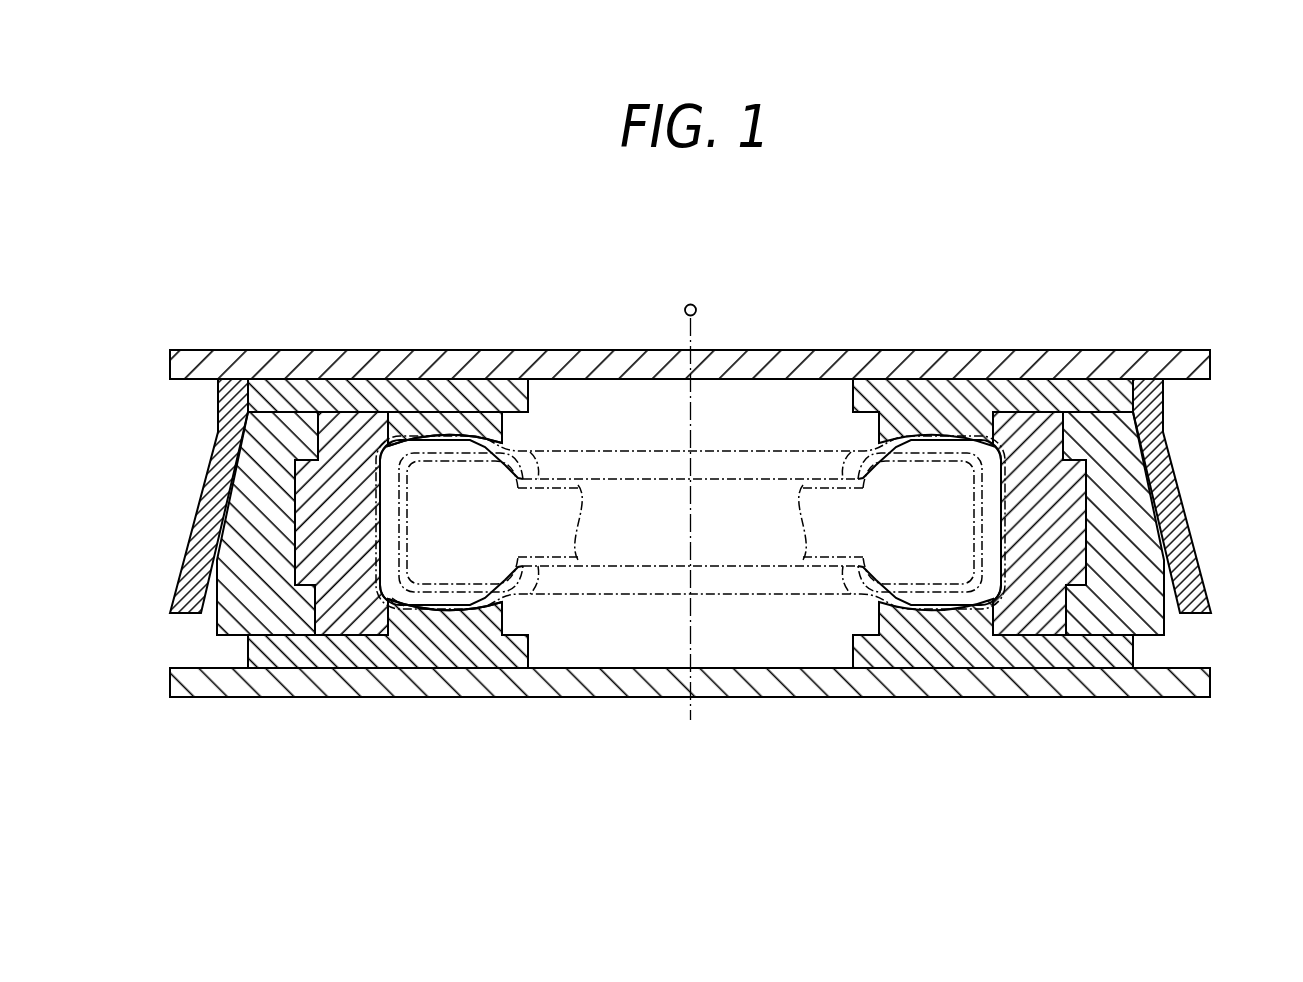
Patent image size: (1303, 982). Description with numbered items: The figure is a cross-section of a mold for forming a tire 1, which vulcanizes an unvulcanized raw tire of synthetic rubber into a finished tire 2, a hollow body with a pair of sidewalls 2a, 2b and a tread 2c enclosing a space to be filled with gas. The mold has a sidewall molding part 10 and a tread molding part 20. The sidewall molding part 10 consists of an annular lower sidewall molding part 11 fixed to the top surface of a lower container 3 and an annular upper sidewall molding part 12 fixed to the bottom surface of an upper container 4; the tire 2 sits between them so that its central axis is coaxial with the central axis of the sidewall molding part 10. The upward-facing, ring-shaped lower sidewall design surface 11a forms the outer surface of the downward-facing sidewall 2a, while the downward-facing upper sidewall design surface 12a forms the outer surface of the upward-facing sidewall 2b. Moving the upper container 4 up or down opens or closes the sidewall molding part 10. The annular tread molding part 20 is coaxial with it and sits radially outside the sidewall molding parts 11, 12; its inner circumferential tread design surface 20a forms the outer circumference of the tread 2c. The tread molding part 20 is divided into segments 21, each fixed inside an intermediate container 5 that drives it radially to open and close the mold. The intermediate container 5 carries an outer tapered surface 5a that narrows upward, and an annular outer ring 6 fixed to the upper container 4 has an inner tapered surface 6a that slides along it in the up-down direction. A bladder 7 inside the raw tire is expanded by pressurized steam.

The mold for forming a tire 1 is at (1180, 253).
The tire 2 is at (735, 598).
The sidewall 2a is at (938, 620).
The sidewall 2b is at (929, 430).
The tread 2c is at (1007, 543).
The lower container 3 is at (540, 690).
The upper container 4 is at (522, 365).
The intermediate container 5 is at (214, 628).
The tapered surface 5a is at (230, 490).
The outer ring 6 is at (1209, 568).
The tapered surface 6a is at (1150, 512).
The bladder 7 is at (413, 603).
The sidewall molding part 10 is at (531, 395).
The lower sidewall molding part 11 is at (505, 617).
The lower sidewall design surface 11a is at (416, 584).
The upper sidewall molding part 12 is at (505, 427).
The upper sidewall design surface 12a is at (445, 438).
The tread molding part 20 is at (367, 407).
The tread design surface 20a is at (1003, 523).
The segment 21 is at (341, 407).